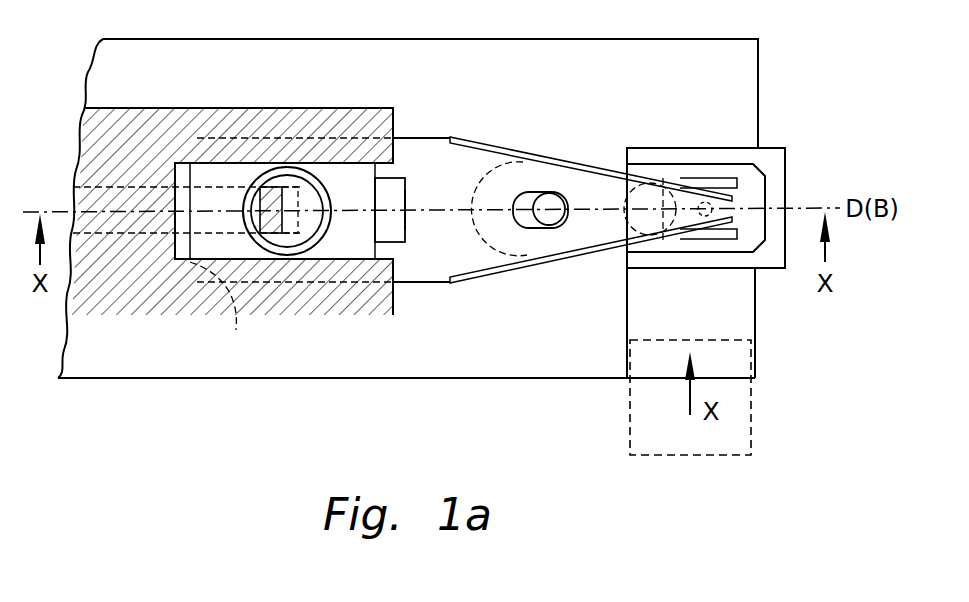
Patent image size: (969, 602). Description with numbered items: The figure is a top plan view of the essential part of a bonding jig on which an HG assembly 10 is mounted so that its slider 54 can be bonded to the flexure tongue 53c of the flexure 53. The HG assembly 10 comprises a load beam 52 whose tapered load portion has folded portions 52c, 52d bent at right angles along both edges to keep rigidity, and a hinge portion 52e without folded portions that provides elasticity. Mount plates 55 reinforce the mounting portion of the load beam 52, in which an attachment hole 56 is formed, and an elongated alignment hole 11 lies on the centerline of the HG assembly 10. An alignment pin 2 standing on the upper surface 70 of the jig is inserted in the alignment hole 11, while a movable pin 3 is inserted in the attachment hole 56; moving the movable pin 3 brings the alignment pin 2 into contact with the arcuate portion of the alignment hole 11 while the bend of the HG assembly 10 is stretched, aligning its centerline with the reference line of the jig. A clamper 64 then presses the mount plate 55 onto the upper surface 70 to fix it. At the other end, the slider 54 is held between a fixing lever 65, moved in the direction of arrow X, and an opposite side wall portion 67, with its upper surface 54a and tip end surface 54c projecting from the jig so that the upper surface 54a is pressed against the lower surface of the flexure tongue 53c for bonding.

The alignment pin 2 is at (557, 203).
The movable pin 3 is at (267, 187).
The HG assembly 10 is at (441, 122).
The alignment hole 11 is at (527, 202).
The load beam 52 is at (468, 250).
The folded portion 52c is at (475, 140).
The folded portion 52d is at (553, 262).
The hinge portion 52e is at (413, 270).
The flexure 53 is at (678, 175).
The flexure tongue 53c is at (670, 217).
The slider 54 is at (772, 147).
The upper surface of the slider 54a is at (780, 185).
The tip end surface of the slider 54c is at (785, 252).
The mount plate 55 is at (232, 336).
The attachment hole 56 is at (293, 187).
The clamper 64 is at (138, 127).
The fixing lever 65 is at (728, 435).
The side wall portion 67 is at (700, 147).
The upper surface of the bonding jig 70 is at (122, 370).